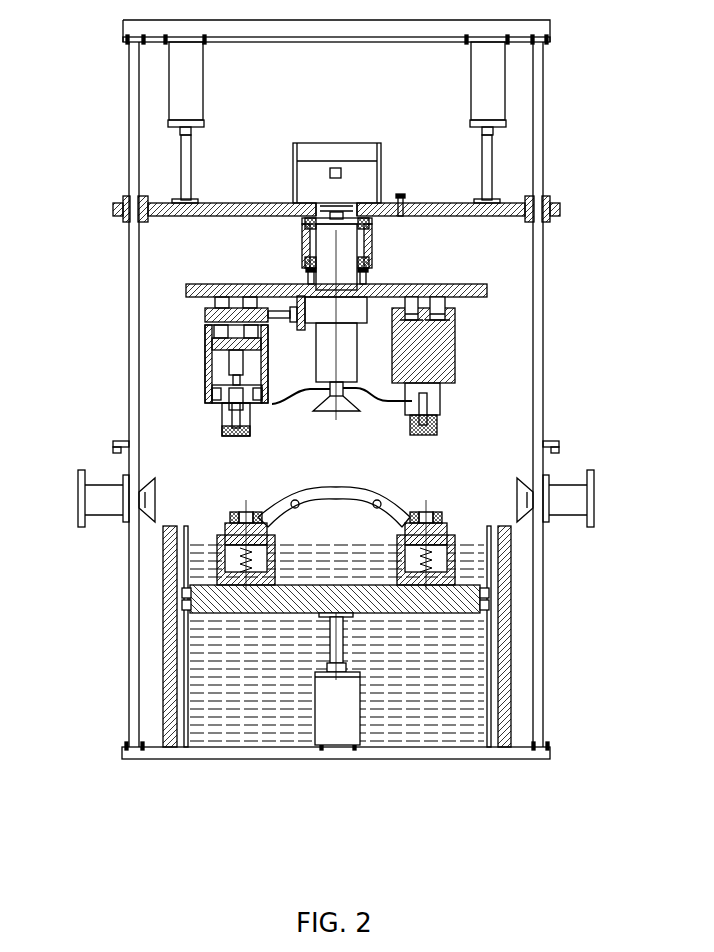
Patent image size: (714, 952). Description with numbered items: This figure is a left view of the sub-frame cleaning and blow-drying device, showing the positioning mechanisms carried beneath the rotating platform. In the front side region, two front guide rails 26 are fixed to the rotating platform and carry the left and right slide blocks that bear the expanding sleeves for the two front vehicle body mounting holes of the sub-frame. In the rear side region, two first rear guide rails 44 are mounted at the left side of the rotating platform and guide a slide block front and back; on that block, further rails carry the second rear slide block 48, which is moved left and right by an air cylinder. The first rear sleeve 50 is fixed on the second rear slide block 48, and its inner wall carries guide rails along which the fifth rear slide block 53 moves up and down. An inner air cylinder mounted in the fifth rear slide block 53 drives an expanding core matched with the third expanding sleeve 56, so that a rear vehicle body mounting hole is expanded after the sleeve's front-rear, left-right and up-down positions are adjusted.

The front guide rails 26 is at (440, 316).
The first rear guide rails 44 is at (200, 297).
The second rear slide block 48 is at (205, 330).
The first rear sleeve 50 is at (205, 362).
The fifth rear slide block 53 is at (208, 390).
The third expanding sleeve 56 is at (227, 428).